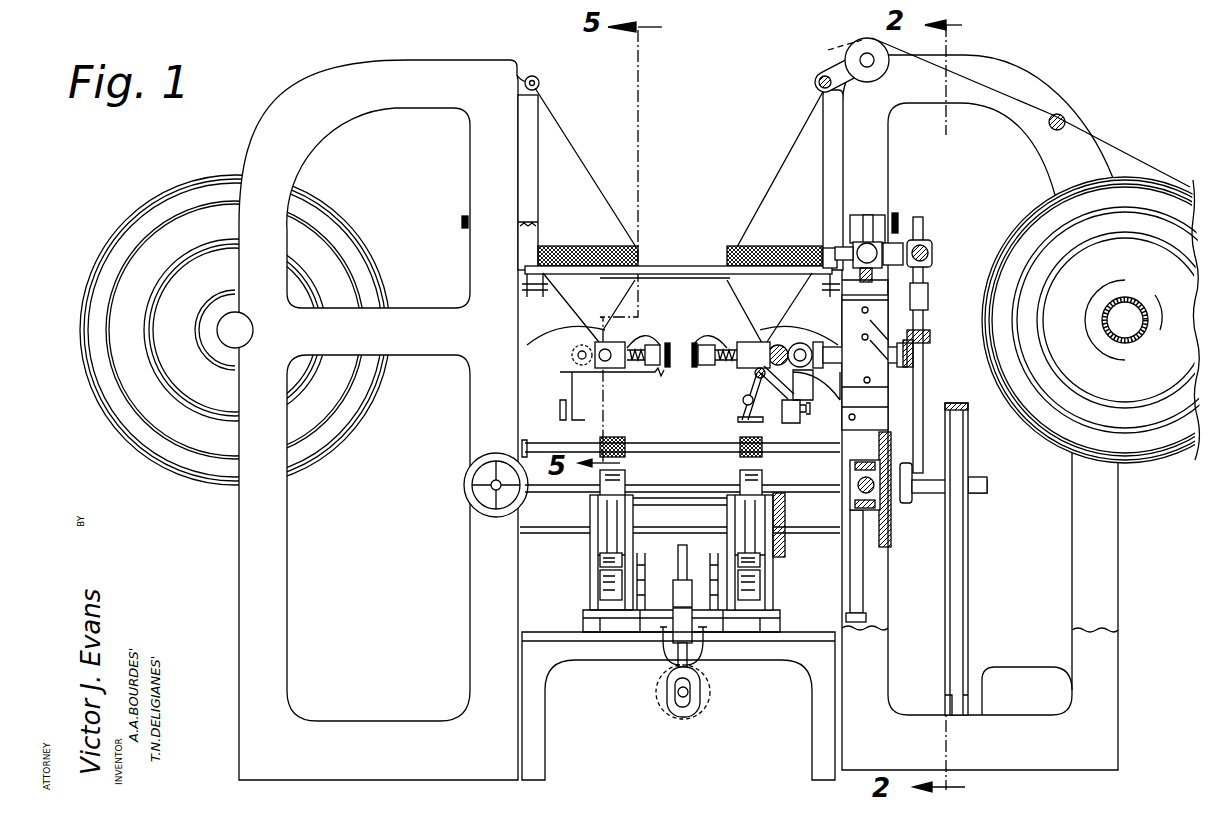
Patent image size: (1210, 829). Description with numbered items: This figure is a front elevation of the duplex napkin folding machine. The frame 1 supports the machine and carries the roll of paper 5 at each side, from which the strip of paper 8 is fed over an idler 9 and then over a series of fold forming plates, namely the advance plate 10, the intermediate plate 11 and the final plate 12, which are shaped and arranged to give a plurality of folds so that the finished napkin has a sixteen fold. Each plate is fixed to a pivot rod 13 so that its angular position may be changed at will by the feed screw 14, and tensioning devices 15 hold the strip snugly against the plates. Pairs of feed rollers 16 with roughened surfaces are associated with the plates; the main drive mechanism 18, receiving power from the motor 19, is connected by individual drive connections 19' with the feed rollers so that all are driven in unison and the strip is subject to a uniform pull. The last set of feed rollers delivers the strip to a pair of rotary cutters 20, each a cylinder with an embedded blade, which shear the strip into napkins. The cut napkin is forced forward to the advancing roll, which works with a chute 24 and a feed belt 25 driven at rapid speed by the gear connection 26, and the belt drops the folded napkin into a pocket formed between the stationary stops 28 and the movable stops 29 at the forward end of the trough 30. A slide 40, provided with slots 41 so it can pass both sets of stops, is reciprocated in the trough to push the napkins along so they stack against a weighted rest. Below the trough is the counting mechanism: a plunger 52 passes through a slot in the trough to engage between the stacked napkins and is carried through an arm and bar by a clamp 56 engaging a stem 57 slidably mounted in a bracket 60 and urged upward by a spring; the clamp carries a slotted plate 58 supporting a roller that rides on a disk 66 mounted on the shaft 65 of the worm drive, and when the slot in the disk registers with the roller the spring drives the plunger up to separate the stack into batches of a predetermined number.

The frame 1 is at (282, 618).
The roll of paper 5 is at (143, 423).
The strip of paper 8 is at (1127, 153).
The idler 9 is at (1064, 118).
The advance plate 10 is at (555, 155).
The intermediate plate 11 is at (748, 297).
The final plate 12 is at (745, 408).
The pivot rod 13 is at (817, 78).
The feed screw 14 is at (802, 416).
The tensioning devices 15 is at (545, 278).
The feed rollers 16 is at (763, 240).
The main drive mechanism 18 is at (937, 487).
The motor 19 is at (1008, 559).
The individual drive connections 19' is at (889, 458).
The rotary cutters 20 is at (740, 472).
The chute 24 is at (612, 543).
The feed belt 25 is at (607, 513).
The gear connection 26 is at (785, 515).
The stationary stops 28 is at (617, 560).
The movable stops 29 is at (625, 567).
The trough 30 is at (750, 577).
The slide 40 is at (610, 593).
The slots 41 is at (753, 567).
The plunger 52 is at (752, 622).
The clamp 56 is at (682, 595).
The stem 57 is at (677, 553).
The slotted plate 58 is at (693, 703).
The bracket 60 is at (683, 630).
The shaft 65 is at (682, 688).
The disk 66 is at (662, 693).